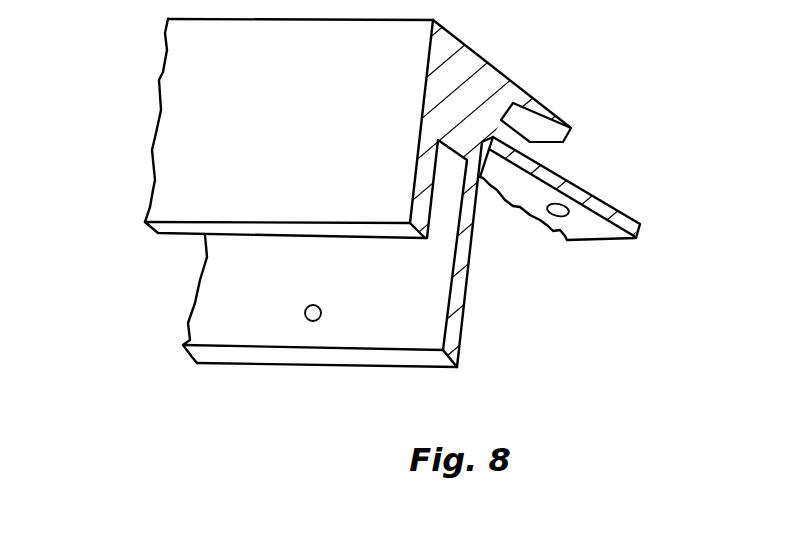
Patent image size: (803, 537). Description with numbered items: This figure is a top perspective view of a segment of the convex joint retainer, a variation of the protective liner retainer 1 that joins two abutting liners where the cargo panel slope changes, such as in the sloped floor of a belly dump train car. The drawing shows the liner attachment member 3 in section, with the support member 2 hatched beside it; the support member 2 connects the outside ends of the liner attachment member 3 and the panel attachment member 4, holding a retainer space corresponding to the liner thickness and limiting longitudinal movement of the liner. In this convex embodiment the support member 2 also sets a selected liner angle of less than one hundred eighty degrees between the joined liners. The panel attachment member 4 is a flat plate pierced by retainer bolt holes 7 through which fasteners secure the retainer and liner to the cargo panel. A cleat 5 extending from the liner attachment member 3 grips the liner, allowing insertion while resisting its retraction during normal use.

The protective liner retainer 1 is at (572, 232).
The support member 2 is at (457, 63).
The liner attachment member 3 is at (172, 152).
The panel attachment member 4 is at (590, 188).
The cleats 5 is at (535, 128).
The retainer bolt holes 7 is at (303, 314).